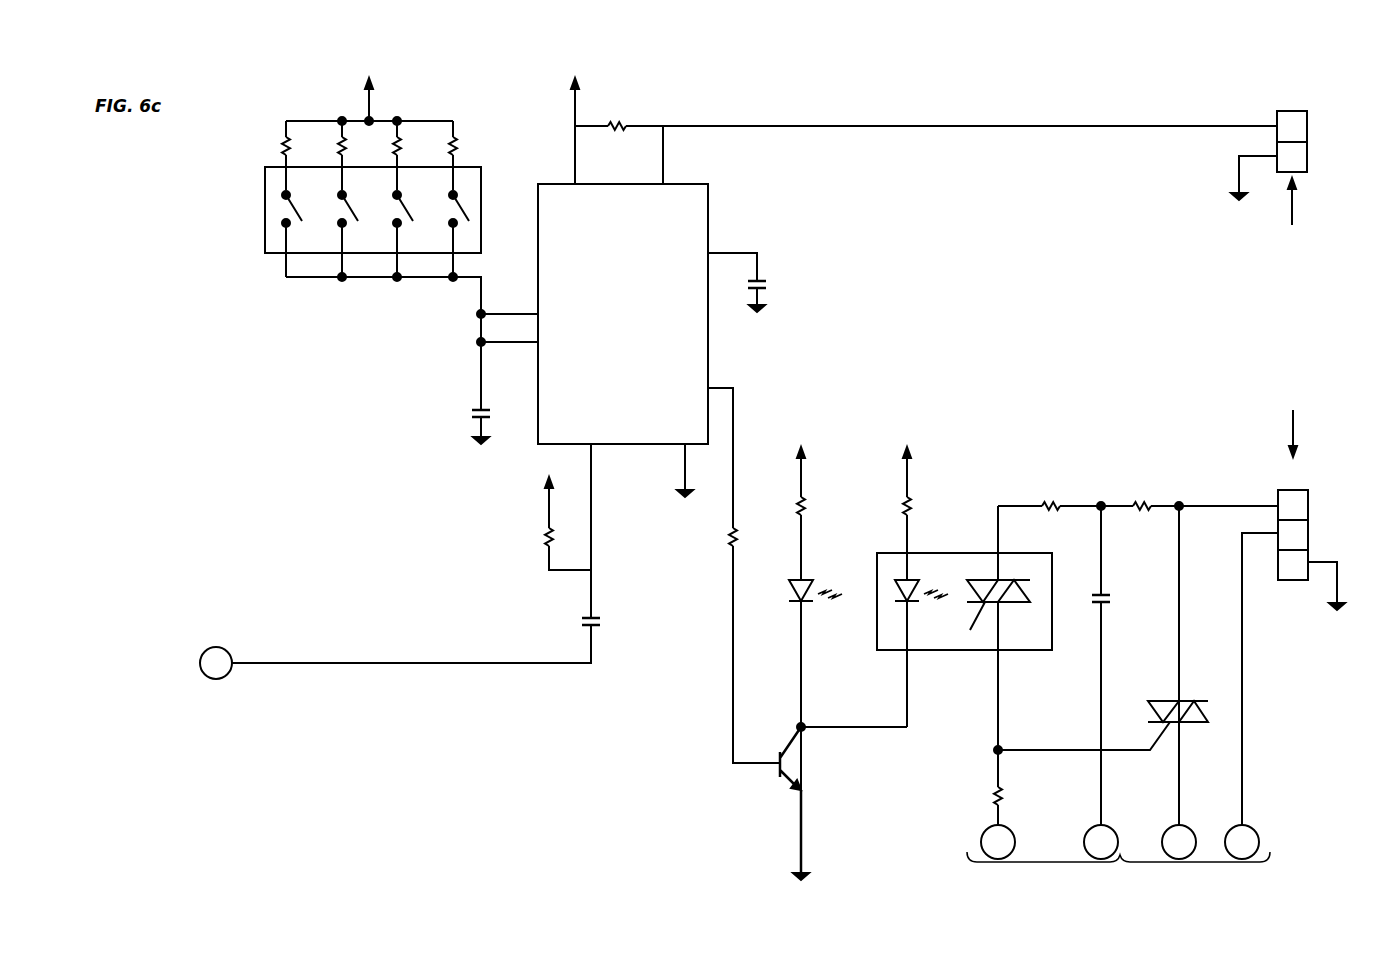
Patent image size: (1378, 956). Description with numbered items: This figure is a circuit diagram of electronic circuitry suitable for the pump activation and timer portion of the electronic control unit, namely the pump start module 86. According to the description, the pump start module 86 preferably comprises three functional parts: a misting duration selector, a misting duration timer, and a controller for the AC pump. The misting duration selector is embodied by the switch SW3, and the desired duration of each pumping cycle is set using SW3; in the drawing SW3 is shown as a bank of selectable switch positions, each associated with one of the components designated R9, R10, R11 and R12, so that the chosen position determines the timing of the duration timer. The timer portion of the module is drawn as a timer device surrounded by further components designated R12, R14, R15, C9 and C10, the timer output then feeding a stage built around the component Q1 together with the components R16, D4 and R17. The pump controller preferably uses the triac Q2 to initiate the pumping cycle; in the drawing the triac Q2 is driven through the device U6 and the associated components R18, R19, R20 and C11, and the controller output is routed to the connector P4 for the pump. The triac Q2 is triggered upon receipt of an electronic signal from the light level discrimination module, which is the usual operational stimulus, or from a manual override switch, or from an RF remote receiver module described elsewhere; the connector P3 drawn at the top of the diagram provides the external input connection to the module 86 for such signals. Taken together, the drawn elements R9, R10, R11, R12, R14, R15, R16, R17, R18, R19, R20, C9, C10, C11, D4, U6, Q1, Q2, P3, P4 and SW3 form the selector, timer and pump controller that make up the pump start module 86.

The pump start module 86 is at (912, 87).
The resistor R9 is at (272, 144).
The resistor R10 is at (322, 144).
The resistor R11 is at (377, 144).
The resistor R12 is at (481, 335).
The resistor R14 is at (618, 140).
The resistor R15 is at (712, 538).
The resistor R16 is at (780, 508).
The resistor R17 is at (886, 508).
The resistor R18 is at (1050, 493).
The resistor R19 is at (1142, 493).
The resistor R20 is at (977, 798).
The capacitor C9 is at (467, 425).
The capacitor C10 is at (676, 455).
The capacitor C11 is at (1121, 600).
The light emitting diode D4 is at (798, 590).
The optocoupler triac driver U6 is at (948, 605).
The transistor Q1 is at (803, 758).
The triac Q2 is at (1179, 727).
The external input connector P3 is at (1292, 129).
The pump connector P4 is at (1293, 521).
The duration select switch SW3 is at (373, 269).